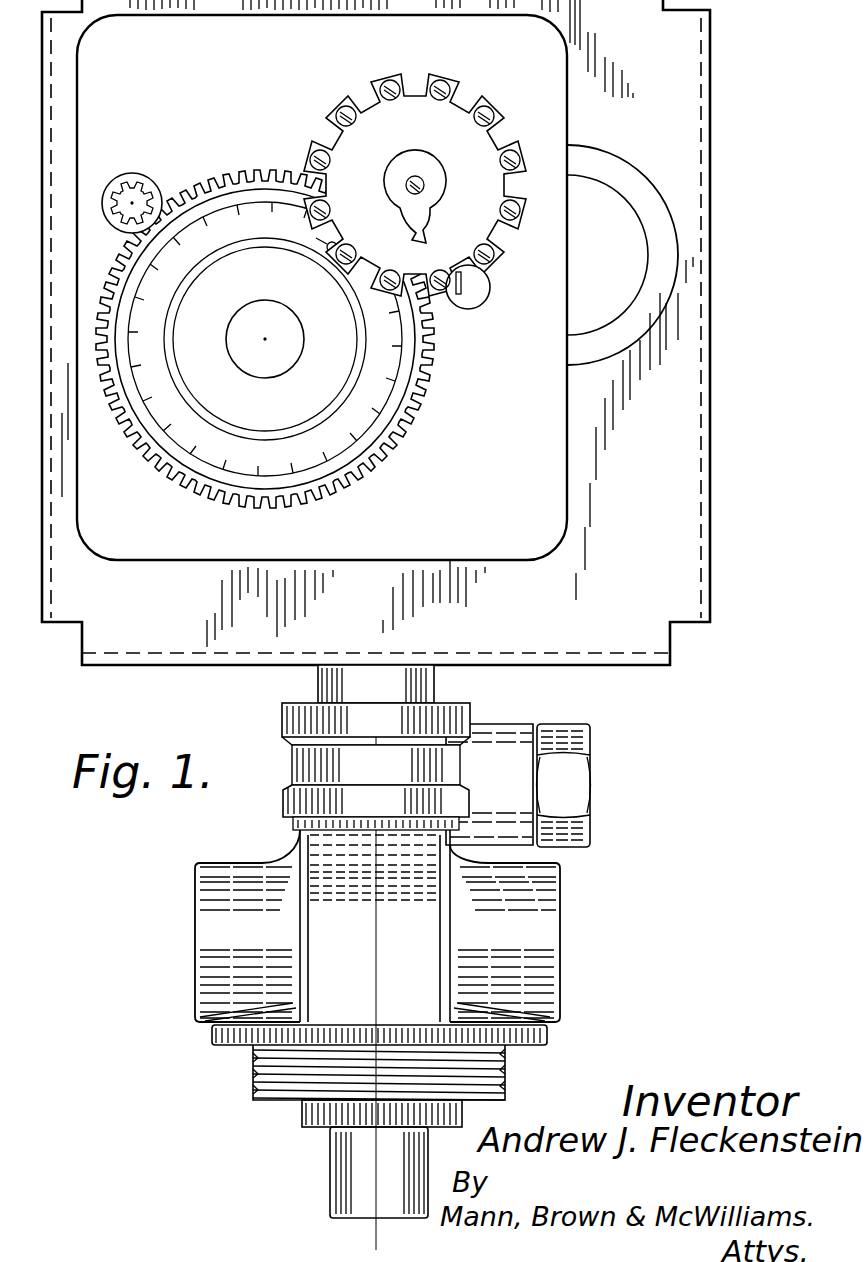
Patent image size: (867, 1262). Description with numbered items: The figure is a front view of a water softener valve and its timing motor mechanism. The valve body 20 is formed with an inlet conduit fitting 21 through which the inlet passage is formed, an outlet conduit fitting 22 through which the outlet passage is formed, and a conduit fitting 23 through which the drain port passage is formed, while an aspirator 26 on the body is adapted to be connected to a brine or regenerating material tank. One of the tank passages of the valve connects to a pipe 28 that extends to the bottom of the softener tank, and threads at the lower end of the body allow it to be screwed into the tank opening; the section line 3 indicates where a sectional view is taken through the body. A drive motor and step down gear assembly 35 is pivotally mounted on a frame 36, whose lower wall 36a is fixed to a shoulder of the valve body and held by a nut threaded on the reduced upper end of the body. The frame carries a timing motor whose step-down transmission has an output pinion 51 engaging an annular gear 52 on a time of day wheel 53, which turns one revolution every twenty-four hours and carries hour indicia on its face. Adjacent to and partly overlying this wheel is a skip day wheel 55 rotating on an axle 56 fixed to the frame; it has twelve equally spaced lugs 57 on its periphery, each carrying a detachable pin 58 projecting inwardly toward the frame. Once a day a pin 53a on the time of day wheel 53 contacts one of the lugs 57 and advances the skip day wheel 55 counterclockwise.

The section line 3- 3 is at (347, 1246).
The water softening valve body 20 is at (364, 957).
The inlet conduit fitting 21 is at (196, 1010).
The outlet conduit fitting 22 is at (562, 997).
The conduit fitting 23 is at (512, 722).
The aspirator 26 is at (506, 1076).
The pipe 28 is at (330, 1158).
The drive motor and step down gear assembly 35 is at (598, 160).
The drive motor and timing motor mechanism frame 36 is at (724, 473).
The lower wall of the frame 36a is at (478, 652).
The output pinion 51 is at (143, 192).
The annular gear 52 is at (142, 447).
The time of day wheel 53 is at (224, 380).
The pin 53a is at (303, 236).
The skip day wheel 55 is at (468, 156).
The axle 56 is at (425, 186).
The lugs 57 is at (338, 108).
The detachable pin 58 is at (382, 84).